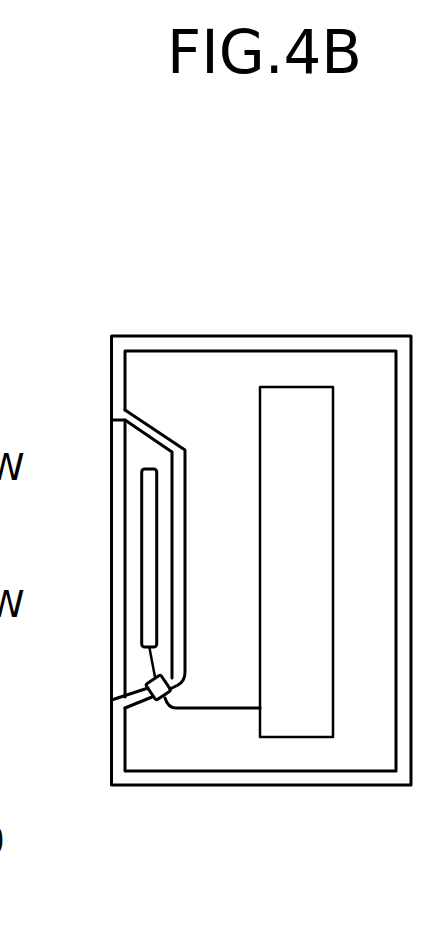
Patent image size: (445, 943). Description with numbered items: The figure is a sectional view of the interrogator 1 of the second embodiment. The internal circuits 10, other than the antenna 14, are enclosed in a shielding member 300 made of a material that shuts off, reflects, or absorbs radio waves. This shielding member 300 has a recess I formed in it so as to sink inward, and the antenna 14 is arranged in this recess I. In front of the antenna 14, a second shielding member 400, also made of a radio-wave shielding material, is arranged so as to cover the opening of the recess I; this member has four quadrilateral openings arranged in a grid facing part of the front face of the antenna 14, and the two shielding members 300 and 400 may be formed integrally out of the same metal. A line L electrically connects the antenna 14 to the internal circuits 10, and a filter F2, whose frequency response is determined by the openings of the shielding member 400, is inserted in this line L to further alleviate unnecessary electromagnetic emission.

The interrogator 1 is at (425, 283).
The internal circuits 10 is at (320, 643).
The antenna 14 is at (150, 512).
The shielding member 300 is at (363, 778).
The shielding member 400 is at (116, 660).
The recess I is at (142, 453).
The line L is at (228, 707).
The filter F2 is at (158, 702).